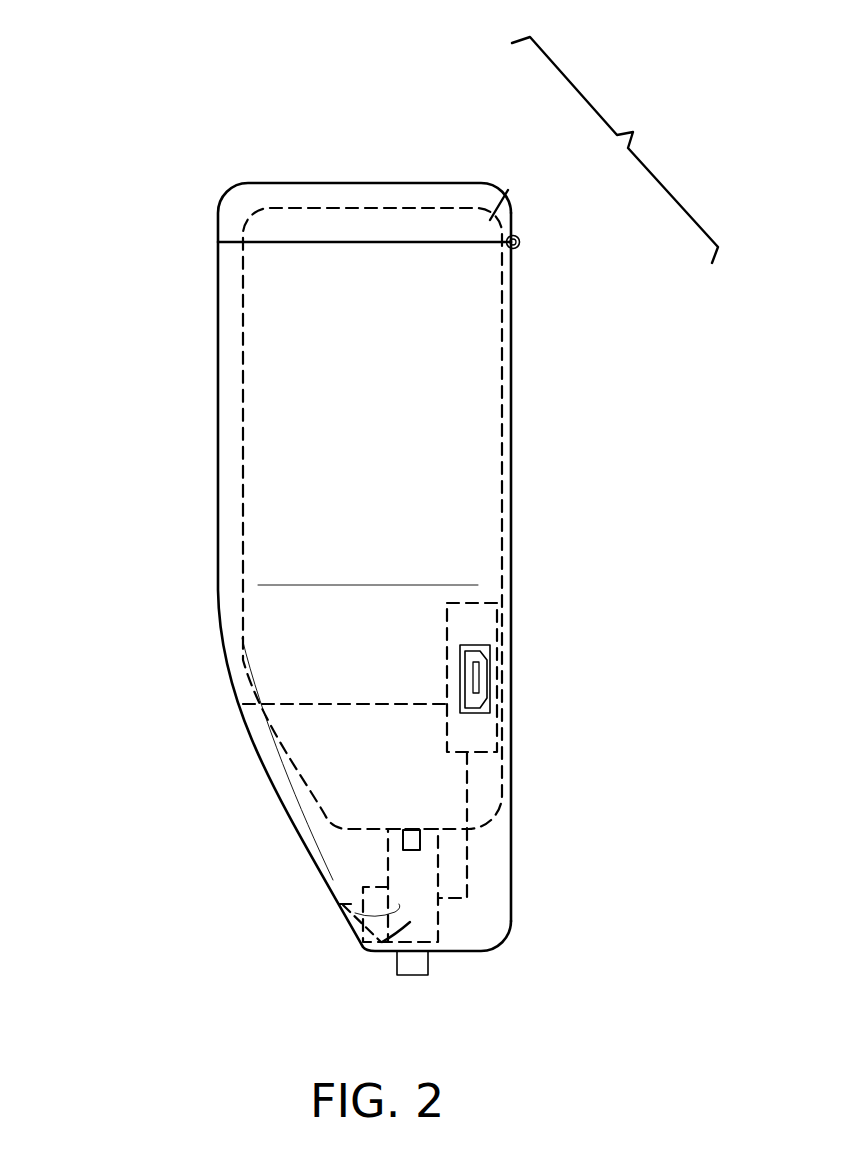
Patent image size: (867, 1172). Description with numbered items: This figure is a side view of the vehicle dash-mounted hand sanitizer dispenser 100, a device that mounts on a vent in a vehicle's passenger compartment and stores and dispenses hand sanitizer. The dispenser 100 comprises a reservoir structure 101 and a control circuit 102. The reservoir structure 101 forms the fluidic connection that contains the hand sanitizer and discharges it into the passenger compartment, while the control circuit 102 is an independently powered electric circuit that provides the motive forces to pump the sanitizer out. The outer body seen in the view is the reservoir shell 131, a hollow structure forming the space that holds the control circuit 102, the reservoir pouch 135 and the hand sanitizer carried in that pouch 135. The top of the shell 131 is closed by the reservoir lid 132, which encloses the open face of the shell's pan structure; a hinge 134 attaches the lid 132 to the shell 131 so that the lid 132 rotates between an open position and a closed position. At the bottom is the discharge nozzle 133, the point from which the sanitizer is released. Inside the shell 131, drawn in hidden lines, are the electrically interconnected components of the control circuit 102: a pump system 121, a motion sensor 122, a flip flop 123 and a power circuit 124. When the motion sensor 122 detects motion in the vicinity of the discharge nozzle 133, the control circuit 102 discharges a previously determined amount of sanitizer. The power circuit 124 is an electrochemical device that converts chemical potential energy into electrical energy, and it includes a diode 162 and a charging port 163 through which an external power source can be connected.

The vehicle dash-mounted hand sanitizer dispenser 100 is at (190, 155).
The reservoir structure 101 is at (615, 150).
The control circuit 102 is at (516, 804).
The pump system 121 is at (383, 942).
The motion sensor 122 is at (340, 919).
The flip flop 123 is at (420, 840).
The power circuit 124 is at (468, 622).
The reservoir shell 131 is at (512, 307).
The reservoir lid 132 is at (403, 183).
The discharge nozzle 133 is at (412, 976).
The hinge 134 is at (520, 239).
The reservoir pouch 135 is at (508, 190).
The diode 162 is at (248, 698).
The charging port 163 is at (473, 680).